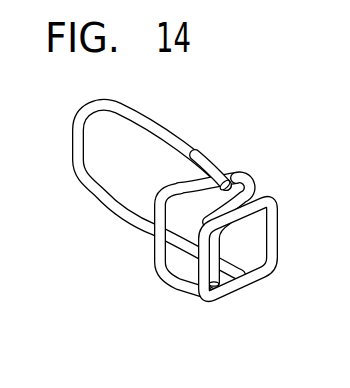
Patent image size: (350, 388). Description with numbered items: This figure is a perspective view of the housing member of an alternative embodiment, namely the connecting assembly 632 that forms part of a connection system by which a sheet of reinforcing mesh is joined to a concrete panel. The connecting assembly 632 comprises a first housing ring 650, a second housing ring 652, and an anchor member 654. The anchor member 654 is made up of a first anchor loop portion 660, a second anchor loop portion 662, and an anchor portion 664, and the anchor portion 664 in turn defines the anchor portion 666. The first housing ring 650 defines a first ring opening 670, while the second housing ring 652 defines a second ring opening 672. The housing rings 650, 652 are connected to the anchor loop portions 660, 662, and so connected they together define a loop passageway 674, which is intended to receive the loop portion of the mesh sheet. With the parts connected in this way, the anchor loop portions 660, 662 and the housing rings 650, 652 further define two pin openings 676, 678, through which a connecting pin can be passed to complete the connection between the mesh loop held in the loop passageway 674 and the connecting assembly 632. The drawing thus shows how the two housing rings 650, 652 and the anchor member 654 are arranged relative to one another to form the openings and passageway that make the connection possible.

The connecting assembly 632 is at (227, 128).
The first housing ring 650 is at (168, 116).
The second housing ring 652 is at (274, 226).
The anchor member 654 is at (156, 217).
The first anchor loop portion 660 is at (248, 171).
The second anchor loop portion 662 is at (216, 306).
The anchor portion 664 is at (74, 133).
The anchor portion 666 is at (108, 181).
The first ring opening 670 is at (254, 246).
The second ring opening 672 is at (163, 236).
The loop passageway 674 is at (243, 254).
The pin opening 676 is at (222, 178).
The pin opening 678 is at (219, 287).